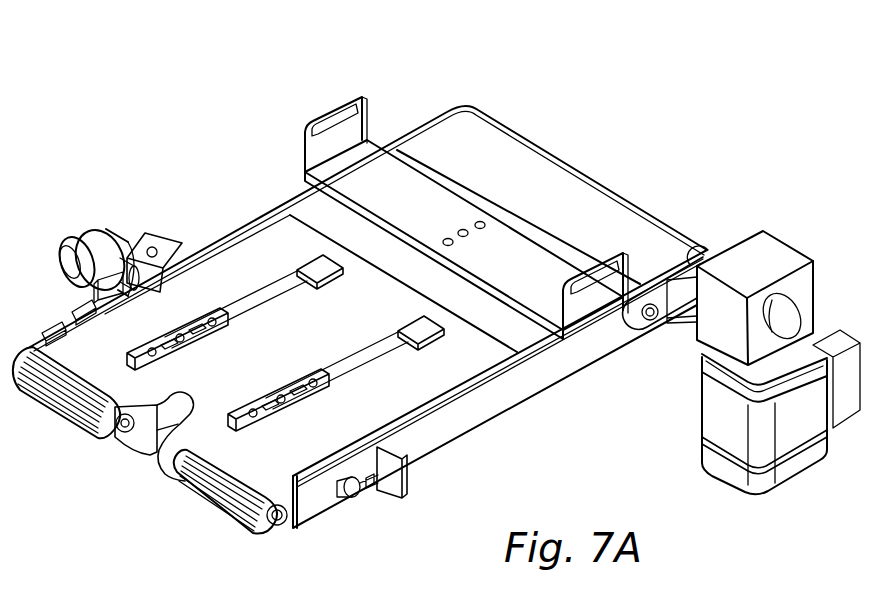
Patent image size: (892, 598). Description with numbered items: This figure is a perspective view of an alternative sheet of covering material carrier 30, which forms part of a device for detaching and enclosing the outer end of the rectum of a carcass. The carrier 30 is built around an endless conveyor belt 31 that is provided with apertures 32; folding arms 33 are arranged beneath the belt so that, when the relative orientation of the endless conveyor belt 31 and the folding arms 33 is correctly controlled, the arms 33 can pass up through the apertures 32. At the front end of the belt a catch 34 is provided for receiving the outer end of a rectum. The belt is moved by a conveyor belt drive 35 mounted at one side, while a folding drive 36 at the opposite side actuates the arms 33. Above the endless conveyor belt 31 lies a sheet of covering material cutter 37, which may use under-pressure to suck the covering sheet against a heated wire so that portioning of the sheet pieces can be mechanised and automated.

The sheet of covering material carrier 30 is at (436, 276).
The endless conveyor belt 31 is at (225, 278).
The apertures 32 is at (267, 300).
The folding arms 33 is at (143, 355).
The catch 34 is at (129, 465).
The conveyor belt drive 35 is at (753, 262).
The folding drive 36 is at (80, 243).
The sheet of covering material cutter 37 is at (524, 270).